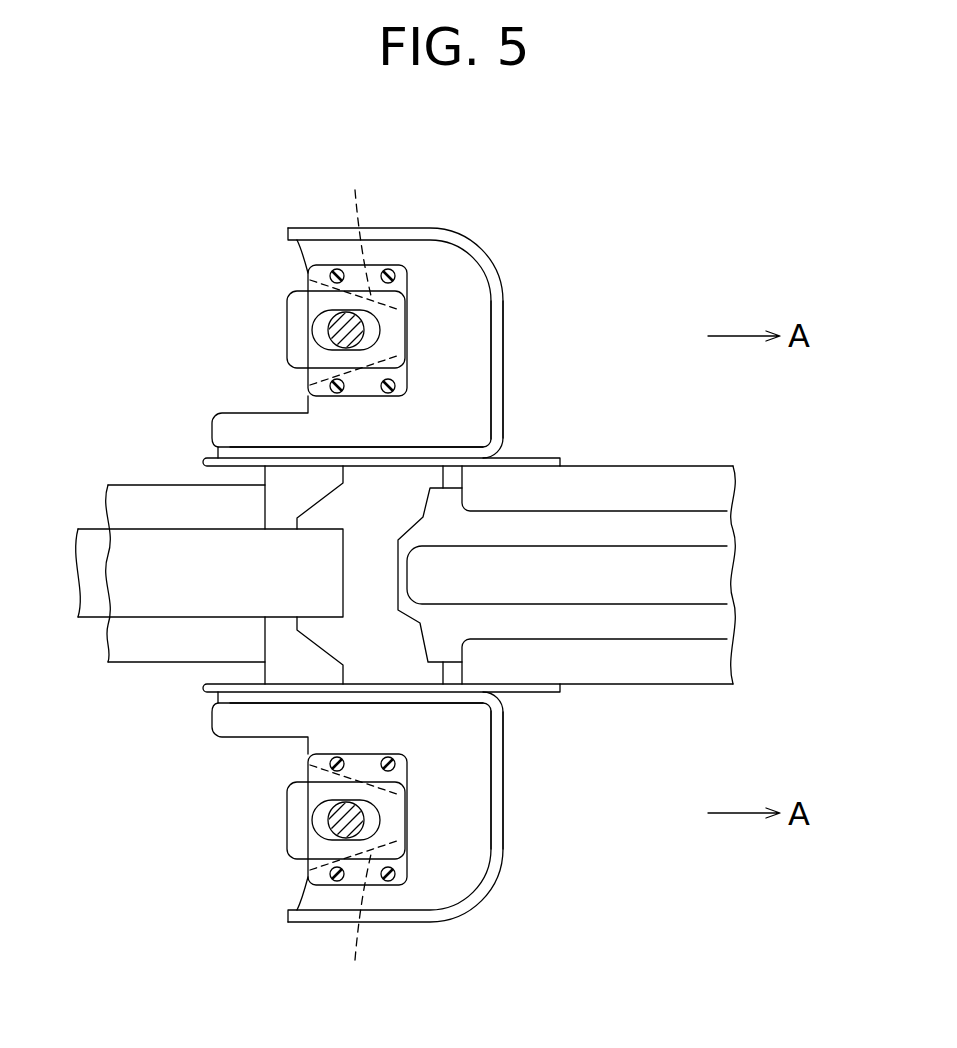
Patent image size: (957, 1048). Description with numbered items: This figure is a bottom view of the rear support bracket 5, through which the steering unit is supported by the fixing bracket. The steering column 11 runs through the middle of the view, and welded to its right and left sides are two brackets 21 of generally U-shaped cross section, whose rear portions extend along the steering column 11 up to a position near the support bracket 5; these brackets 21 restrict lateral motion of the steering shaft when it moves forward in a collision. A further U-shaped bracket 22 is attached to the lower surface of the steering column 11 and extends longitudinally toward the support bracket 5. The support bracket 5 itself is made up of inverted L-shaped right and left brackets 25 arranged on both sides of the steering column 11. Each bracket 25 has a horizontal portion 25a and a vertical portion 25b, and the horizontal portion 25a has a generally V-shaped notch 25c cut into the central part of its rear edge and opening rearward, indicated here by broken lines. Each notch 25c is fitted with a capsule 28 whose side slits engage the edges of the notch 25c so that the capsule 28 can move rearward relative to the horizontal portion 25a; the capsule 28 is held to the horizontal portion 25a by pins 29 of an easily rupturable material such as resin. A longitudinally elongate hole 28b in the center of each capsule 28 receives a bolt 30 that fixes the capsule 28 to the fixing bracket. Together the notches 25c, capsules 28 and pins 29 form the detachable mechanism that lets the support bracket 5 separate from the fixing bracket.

The rear support bracket 5 is at (567, 280).
The steering column 11 is at (137, 482).
The bracket 21 is at (692, 488).
The bracket 22 is at (710, 581).
The bracket 25 is at (497, 275).
The horizontal portion 25a is at (460, 333).
The vertical portion 25b is at (395, 452).
The notch 25c is at (367, 582).
The capsule 28 is at (286, 296).
The elongate hole 28b is at (323, 323).
The pins 29 is at (335, 268).
The bolt 30 is at (340, 330).